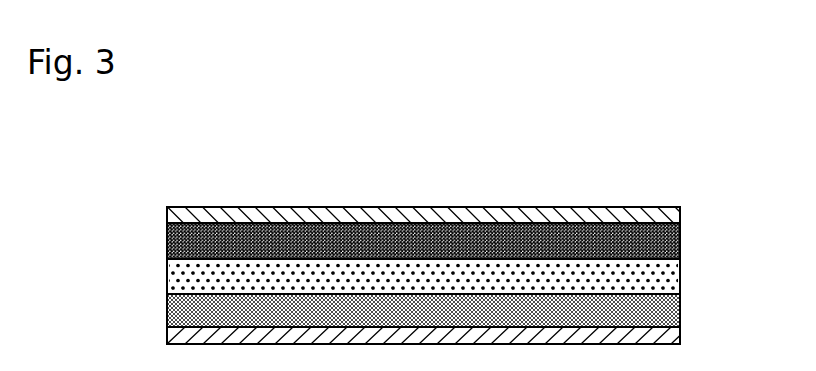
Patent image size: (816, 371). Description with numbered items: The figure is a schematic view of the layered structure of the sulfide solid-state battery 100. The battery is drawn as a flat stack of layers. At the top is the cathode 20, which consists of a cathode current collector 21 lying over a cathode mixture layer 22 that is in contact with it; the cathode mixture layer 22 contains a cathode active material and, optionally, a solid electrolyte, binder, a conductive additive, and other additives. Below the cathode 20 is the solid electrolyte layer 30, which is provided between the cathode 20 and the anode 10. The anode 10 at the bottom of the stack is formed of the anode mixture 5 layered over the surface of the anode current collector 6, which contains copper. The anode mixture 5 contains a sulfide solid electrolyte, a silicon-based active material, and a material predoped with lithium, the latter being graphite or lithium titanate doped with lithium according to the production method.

The sulfide solid-state battery 100 is at (445, 162).
The cathode 20 is at (752, 208).
The cathode current collector 21 is at (680, 218).
The cathode mixture layer 22 is at (680, 242).
The solid electrolyte layer 30 is at (680, 277).
The anode 10 is at (745, 298).
The anode mixture 5 is at (680, 310).
The anode current collector 6 is at (680, 333).